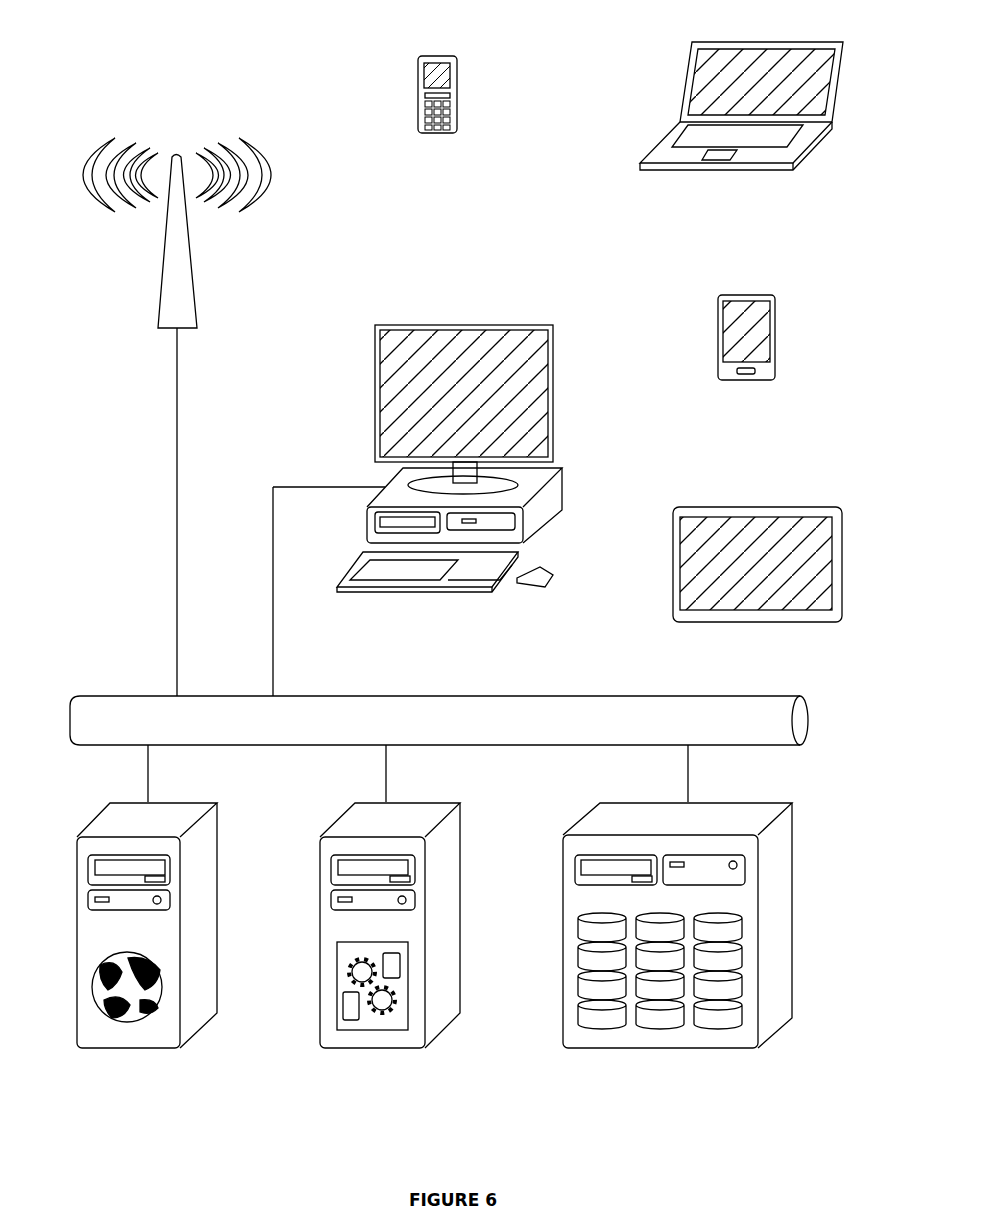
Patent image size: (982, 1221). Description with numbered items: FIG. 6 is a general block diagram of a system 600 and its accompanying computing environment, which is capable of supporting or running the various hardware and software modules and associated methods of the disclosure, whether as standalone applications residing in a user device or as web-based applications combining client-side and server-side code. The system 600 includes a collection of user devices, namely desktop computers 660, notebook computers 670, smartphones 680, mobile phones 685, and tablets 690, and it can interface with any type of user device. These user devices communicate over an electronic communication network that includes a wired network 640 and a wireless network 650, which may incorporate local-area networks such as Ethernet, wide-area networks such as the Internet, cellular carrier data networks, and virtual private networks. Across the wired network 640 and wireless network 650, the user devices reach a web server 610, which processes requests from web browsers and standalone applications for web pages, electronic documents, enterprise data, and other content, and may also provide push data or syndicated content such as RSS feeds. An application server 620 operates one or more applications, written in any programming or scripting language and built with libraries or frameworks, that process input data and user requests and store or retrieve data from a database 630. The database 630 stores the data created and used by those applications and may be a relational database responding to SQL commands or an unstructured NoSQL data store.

The system 600 is at (138, 77).
The web server 610 is at (133, 1038).
The application server 620 is at (373, 1038).
The database 630 is at (650, 1030).
The wired network 640 is at (439, 720).
The wireless network 650 is at (200, 240).
The desktop computers 660 is at (445, 595).
The notebook computers 670 is at (732, 180).
The smartphones 680 is at (750, 390).
The mobile phones 685 is at (442, 150).
The tablets 690 is at (750, 613).